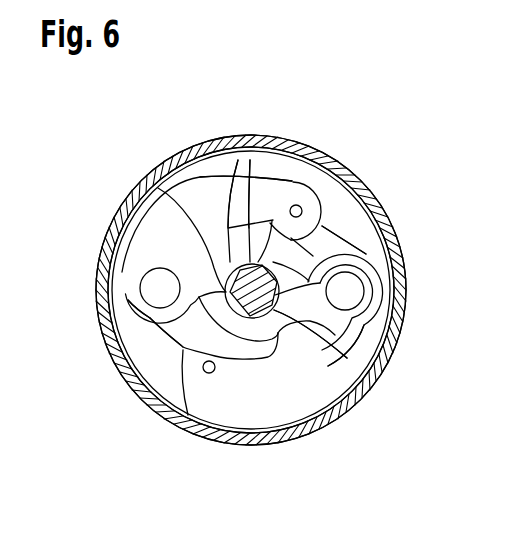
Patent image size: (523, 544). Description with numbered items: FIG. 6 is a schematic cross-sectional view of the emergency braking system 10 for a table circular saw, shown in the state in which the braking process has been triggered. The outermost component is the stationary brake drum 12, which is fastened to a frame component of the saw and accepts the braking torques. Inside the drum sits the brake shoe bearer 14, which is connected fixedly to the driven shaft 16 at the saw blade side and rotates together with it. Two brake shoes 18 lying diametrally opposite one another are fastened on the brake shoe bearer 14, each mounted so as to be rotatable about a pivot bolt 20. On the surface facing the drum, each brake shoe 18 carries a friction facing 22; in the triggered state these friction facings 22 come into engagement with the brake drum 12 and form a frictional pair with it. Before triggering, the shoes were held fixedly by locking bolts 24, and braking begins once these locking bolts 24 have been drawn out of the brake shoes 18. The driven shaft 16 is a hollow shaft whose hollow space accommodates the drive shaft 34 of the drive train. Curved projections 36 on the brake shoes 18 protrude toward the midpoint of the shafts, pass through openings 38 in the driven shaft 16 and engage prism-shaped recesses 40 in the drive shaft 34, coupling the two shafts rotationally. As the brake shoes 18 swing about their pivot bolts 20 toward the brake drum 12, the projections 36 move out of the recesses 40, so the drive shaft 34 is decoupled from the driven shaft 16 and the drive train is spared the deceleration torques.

The emergency braking system 10 is at (411, 108).
The brake drum 12 is at (376, 211).
The brake shoe bearer 14 is at (180, 333).
The driven shaft 16 is at (275, 185).
The brake shoes 18 is at (127, 222).
The pivot bolt 20 is at (155, 292).
The friction facing 22 is at (228, 168).
The locking bolts 24 is at (300, 207).
The drive shaft 34 is at (370, 340).
The curved projections 36 is at (166, 228).
The openings 38 is at (265, 168).
The prism-shaped recesses 40 is at (243, 262).